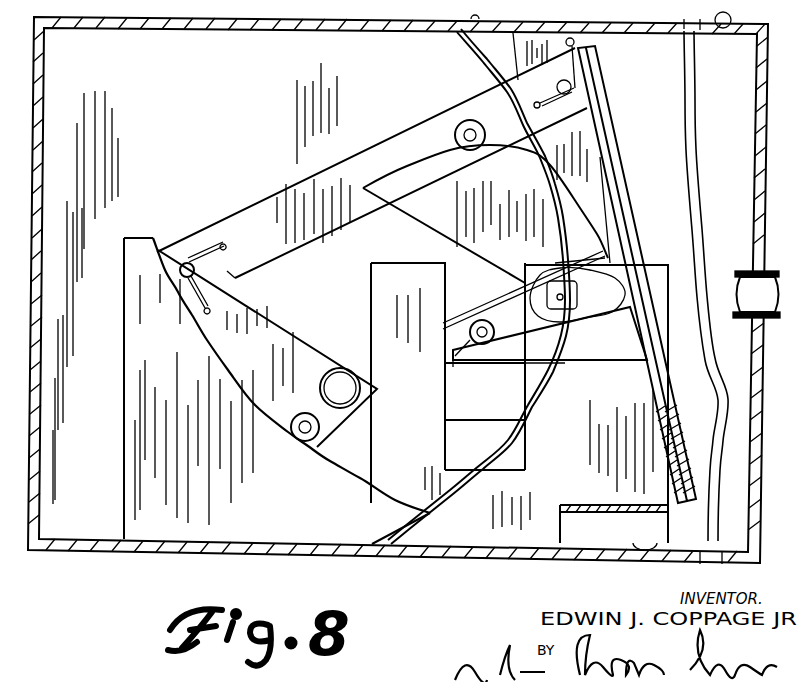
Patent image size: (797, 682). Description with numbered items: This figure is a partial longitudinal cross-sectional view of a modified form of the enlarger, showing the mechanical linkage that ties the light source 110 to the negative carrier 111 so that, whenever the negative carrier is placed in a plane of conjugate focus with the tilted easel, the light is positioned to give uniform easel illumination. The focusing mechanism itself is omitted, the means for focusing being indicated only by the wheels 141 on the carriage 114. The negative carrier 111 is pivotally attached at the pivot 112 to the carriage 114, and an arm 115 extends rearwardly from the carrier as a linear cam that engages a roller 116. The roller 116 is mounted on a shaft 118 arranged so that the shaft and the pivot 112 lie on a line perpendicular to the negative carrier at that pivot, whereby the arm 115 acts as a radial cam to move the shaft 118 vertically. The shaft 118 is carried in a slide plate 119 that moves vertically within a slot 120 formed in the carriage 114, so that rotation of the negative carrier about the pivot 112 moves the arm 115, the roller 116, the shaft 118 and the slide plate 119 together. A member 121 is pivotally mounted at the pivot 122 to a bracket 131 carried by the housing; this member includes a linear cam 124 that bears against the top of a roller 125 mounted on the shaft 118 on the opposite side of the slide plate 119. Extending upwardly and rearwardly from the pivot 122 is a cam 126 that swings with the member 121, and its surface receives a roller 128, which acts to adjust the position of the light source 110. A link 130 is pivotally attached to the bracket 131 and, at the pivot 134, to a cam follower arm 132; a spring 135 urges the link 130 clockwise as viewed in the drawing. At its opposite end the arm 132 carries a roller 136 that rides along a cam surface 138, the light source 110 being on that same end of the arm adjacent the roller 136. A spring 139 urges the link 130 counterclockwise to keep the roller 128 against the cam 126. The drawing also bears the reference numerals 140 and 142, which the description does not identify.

The light source 110 is at (320, 382).
The negative carrier 111 is at (623, 159).
The pivot 112 is at (624, 326).
The carriage 114 is at (580, 472).
The arm 115 is at (564, 371).
The roller 116 is at (492, 342).
The shaft 118 is at (458, 370).
The slide plate 119 is at (448, 400).
The slot 120 is at (454, 283).
The member 121 is at (427, 237).
The pivot 122 is at (577, 295).
The linear cam 124 is at (488, 306).
The roller 125 is at (440, 326).
The cam 126 is at (404, 171).
The roller 128 is at (454, 118).
The link 130 is at (271, 205).
The bracket 131 is at (614, 58).
The cam follower arm 132 is at (290, 308).
The pivot 134 is at (196, 278).
The spring 135 is at (202, 236).
The roller 136 is at (294, 436).
The cam surface 138 is at (262, 372).
The spring 139 is at (549, 102).
The spool 140 is at (730, 288).
The wheels 141 is at (621, 562).
The frame 142 is at (505, 560).